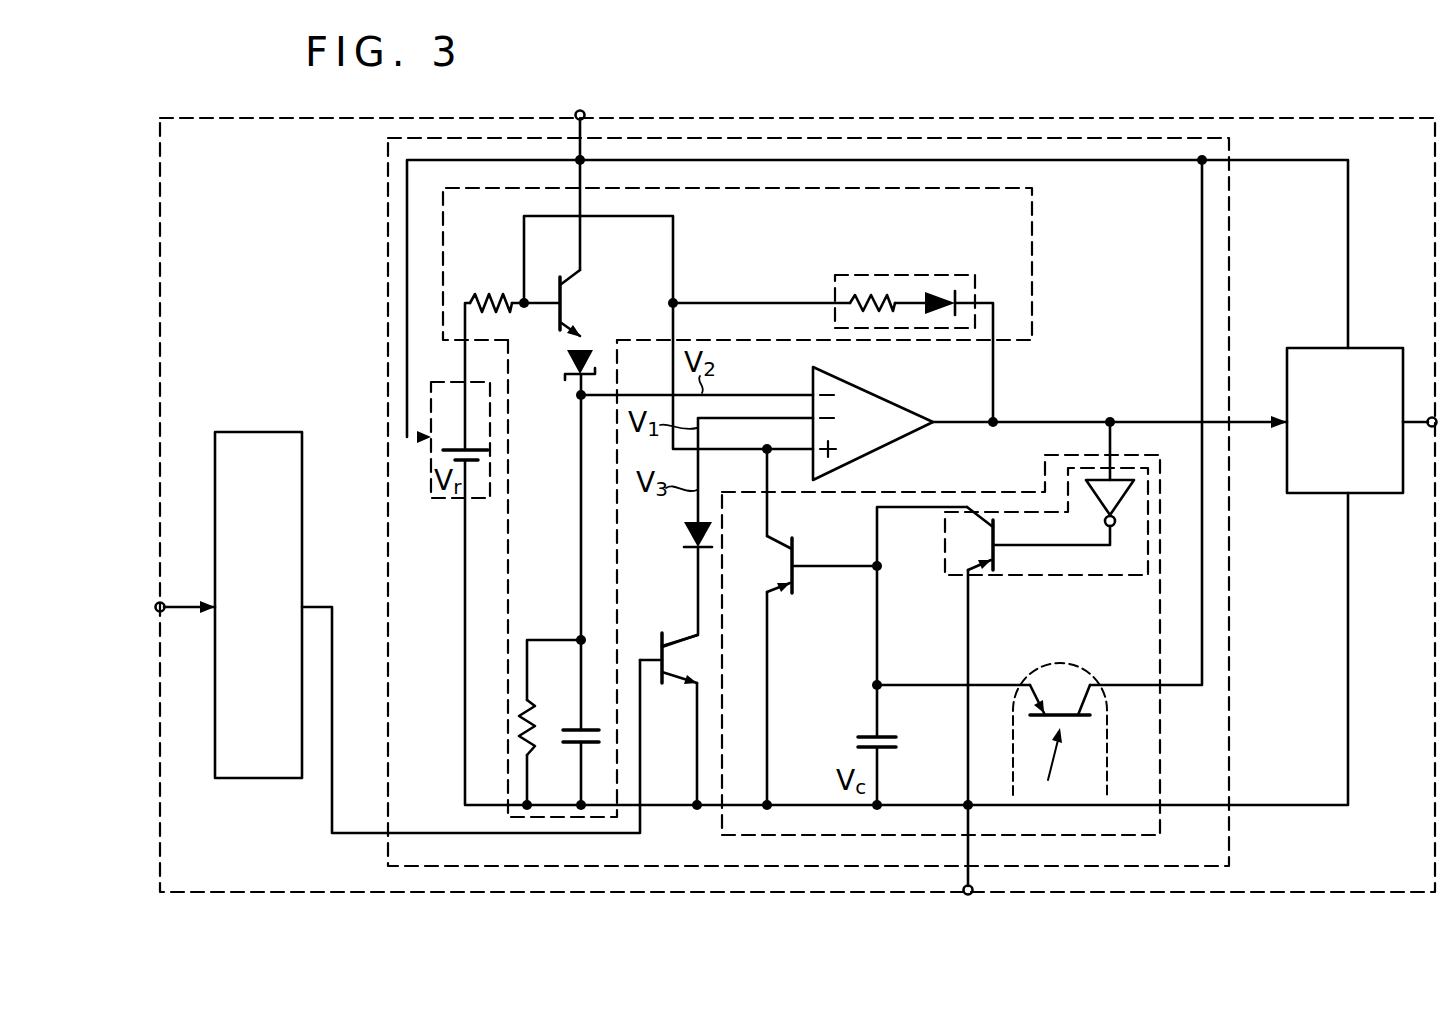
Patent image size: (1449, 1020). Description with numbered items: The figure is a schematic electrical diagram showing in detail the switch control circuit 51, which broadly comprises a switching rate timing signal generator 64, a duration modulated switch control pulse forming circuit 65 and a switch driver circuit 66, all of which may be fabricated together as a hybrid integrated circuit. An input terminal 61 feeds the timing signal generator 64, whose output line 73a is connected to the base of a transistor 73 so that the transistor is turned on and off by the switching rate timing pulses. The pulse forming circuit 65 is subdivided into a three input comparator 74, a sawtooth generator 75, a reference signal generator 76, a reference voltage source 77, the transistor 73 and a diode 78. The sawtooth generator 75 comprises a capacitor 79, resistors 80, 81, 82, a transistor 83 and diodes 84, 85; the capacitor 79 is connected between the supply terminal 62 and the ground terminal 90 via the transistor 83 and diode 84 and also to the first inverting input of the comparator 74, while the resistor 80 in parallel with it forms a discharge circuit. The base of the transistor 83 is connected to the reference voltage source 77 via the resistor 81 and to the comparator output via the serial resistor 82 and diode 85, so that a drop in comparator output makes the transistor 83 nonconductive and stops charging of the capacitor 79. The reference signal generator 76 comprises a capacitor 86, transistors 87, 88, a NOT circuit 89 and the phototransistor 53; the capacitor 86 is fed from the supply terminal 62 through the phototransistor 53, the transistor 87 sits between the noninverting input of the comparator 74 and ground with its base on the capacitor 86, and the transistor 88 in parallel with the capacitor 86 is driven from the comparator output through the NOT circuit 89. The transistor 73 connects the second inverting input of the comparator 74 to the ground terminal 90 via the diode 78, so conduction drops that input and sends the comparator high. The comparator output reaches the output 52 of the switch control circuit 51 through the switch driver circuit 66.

The switch control circuit 51 is at (1363, 119).
The output 52 is at (1432, 432).
The phototransistor 53 is at (1090, 692).
The input terminal 61 is at (162, 600).
The supply terminal 62 is at (583, 114).
The switching rate timing signal generator 64 is at (252, 430).
The switch control pulse forming circuit 65 is at (388, 207).
The switch driver circuit 66 is at (1373, 347).
The transistor 73 is at (665, 652).
The output line 73a is at (330, 605).
The comparator 74 is at (905, 402).
The sawtooth generator 75 is at (1034, 302).
The reference signal generator 76 is at (1160, 810).
The reference voltage source 77 is at (447, 500).
The diode 78 is at (684, 536).
The capacitor 79 is at (580, 725).
The resistor 80 is at (517, 725).
The resistor 81 is at (486, 298).
The resistor 82 is at (862, 297).
The transistor 83 is at (568, 288).
The diode 84 is at (566, 362).
The diode 85 is at (946, 297).
The capacitor 86 is at (888, 752).
The transistor 87 is at (800, 565).
The transistor 88 is at (978, 528).
The NOT circuit 89 is at (1117, 527).
The ground terminal 90 is at (973, 890).